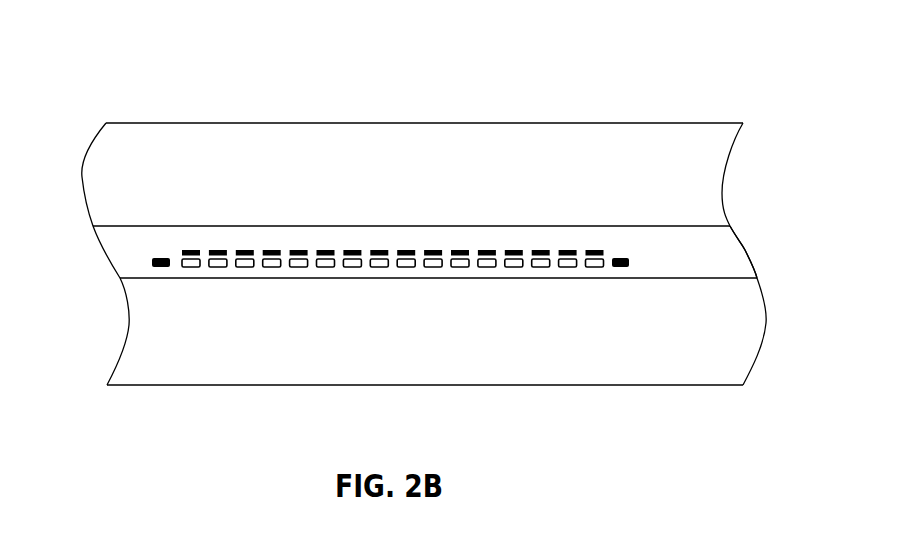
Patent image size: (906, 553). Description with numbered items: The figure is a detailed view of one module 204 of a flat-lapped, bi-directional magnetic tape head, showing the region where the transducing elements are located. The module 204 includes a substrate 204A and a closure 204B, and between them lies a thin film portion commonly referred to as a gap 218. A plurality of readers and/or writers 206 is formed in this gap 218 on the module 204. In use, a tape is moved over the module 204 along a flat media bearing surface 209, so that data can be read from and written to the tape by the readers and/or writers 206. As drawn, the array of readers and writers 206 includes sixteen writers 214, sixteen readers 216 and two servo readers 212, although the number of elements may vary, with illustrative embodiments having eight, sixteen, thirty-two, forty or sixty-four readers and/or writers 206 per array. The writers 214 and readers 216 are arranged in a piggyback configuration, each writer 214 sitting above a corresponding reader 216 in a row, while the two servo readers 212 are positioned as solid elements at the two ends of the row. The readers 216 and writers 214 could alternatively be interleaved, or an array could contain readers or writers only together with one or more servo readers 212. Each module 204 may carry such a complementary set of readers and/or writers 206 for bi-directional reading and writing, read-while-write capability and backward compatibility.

The module 204 is at (118, 94).
The substrate 204A is at (213, 123).
The closure 204B is at (268, 385).
The media bearing surface 209 is at (349, 193).
The readers and/or writers 206 is at (390, 253).
The servo readers 212 is at (152, 262).
The writers 214 is at (513, 250).
The readers 216 is at (513, 268).
The gap 218 is at (745, 250).